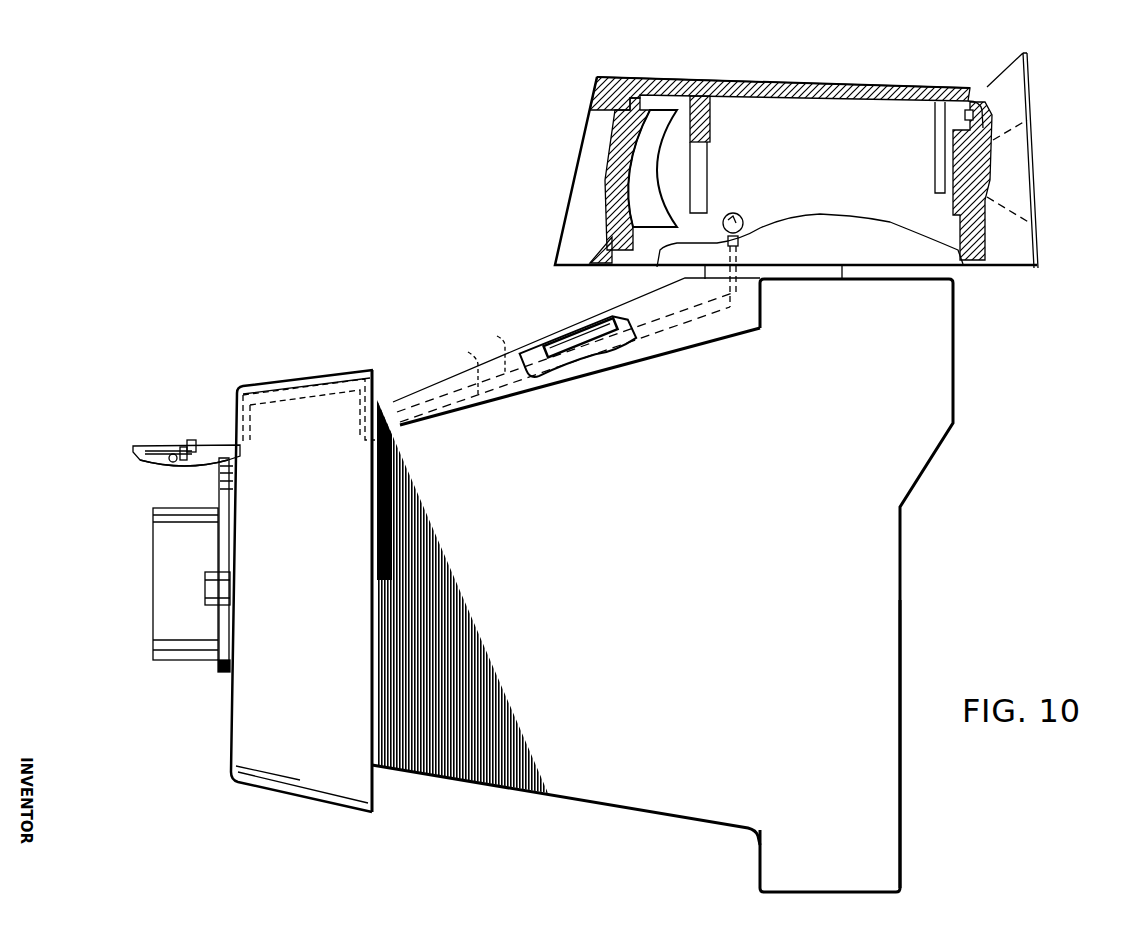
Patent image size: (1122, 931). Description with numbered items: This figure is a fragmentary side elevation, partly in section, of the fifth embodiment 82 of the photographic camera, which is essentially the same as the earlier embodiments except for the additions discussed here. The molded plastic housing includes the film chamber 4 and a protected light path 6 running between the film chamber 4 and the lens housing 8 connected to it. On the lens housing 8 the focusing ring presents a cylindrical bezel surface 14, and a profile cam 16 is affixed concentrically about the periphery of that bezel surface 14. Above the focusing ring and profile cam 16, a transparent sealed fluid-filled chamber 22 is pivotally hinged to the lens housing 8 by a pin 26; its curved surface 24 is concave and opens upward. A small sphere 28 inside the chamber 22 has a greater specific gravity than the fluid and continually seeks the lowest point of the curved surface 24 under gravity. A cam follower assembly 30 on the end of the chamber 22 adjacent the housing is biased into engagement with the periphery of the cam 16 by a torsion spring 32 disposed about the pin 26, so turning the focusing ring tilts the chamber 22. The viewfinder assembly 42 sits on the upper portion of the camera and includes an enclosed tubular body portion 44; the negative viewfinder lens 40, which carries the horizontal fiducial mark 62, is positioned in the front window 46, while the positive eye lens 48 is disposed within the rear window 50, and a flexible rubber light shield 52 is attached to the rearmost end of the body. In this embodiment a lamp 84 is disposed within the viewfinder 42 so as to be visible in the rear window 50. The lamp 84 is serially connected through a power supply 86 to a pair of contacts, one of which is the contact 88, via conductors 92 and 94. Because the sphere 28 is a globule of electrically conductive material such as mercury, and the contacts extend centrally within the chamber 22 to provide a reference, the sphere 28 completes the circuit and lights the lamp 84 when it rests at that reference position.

The film chamber 4 is at (838, 506).
The protected light path 6 is at (619, 547).
The lens housing 8 is at (306, 575).
The cylindrical bezel surface 14 is at (175, 652).
The profile cam 16 is at (222, 673).
The transparent sealed fluid-filled chamber 22 is at (140, 448).
The curved surface 24 is at (180, 468).
The pin 26 is at (187, 453).
The sphere 28 is at (170, 462).
The cam follower assembly 30 is at (236, 466).
The torsion spring 32 is at (150, 455).
The viewfinder lens 40 is at (612, 148).
The viewfinder assembly 42 is at (812, 76).
The tubular body portion 44 is at (878, 90).
The front window 46 is at (586, 111).
The positive eye lens 48 is at (958, 160).
The rear window 50 is at (1012, 152).
The flexible rubber light shield 52 is at (1010, 80).
The fiducial mark 62 is at (606, 180).
The fifth embodiment 82 is at (916, 780).
The lamp 84 is at (743, 220).
The power supply 86 is at (592, 335).
The contact 88 is at (197, 441).
The conductor 92 is at (468, 354).
The conductor 94 is at (498, 336).